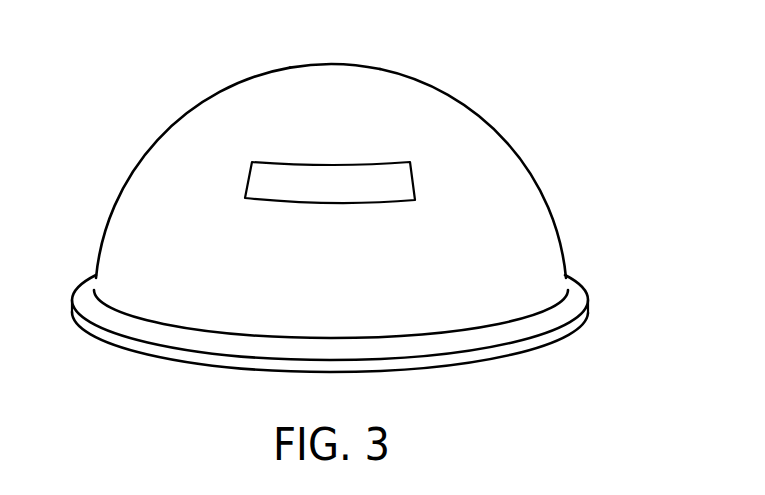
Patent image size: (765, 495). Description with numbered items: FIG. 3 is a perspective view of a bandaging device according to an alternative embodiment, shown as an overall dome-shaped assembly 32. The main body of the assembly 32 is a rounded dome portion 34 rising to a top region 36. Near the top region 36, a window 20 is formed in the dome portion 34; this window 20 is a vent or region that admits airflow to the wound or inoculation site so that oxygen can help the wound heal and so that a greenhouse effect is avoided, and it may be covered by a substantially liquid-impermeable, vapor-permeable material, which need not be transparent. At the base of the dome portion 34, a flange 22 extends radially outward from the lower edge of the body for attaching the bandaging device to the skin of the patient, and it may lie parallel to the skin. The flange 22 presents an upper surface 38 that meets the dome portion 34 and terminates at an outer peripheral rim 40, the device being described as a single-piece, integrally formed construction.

The dome-shaped cover assembly 32 is at (647, 88).
The dome body 34 is at (548, 208).
The dome top 36 is at (375, 70).
The window 20 is at (413, 177).
The flange top surface 38 is at (447, 333).
The flange 22 is at (553, 337).
The flange rim edge 40 is at (113, 325).